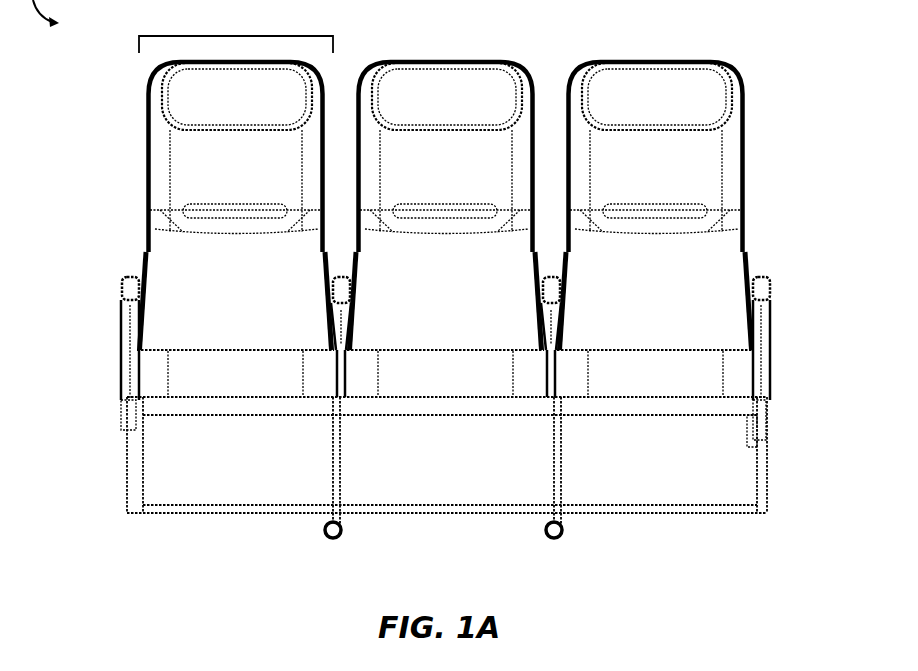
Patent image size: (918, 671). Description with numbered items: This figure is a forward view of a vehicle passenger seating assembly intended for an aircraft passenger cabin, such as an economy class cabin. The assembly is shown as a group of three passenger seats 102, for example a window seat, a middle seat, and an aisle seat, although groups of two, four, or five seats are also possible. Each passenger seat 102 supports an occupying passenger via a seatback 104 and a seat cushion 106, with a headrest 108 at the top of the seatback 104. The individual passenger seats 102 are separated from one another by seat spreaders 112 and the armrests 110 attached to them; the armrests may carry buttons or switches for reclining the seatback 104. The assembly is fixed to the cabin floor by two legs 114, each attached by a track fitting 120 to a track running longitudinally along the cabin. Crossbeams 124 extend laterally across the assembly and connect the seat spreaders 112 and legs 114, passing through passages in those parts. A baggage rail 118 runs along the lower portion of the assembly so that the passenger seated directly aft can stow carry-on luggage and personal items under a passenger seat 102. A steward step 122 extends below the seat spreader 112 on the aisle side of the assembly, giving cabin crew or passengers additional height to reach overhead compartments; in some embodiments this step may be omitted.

The passenger seat 102 is at (233, 32).
The seatback 104 is at (212, 173).
The seat cushion 106 is at (242, 375).
The headrest 108 is at (492, 90).
The armrest 110 is at (127, 280).
The seat spreader 112 is at (340, 323).
The leg 114 is at (333, 457).
The baggage rail 118 is at (758, 508).
The track fitting 120 is at (557, 532).
The steward step 122 is at (752, 423).
The crossbeam 124 is at (657, 407).